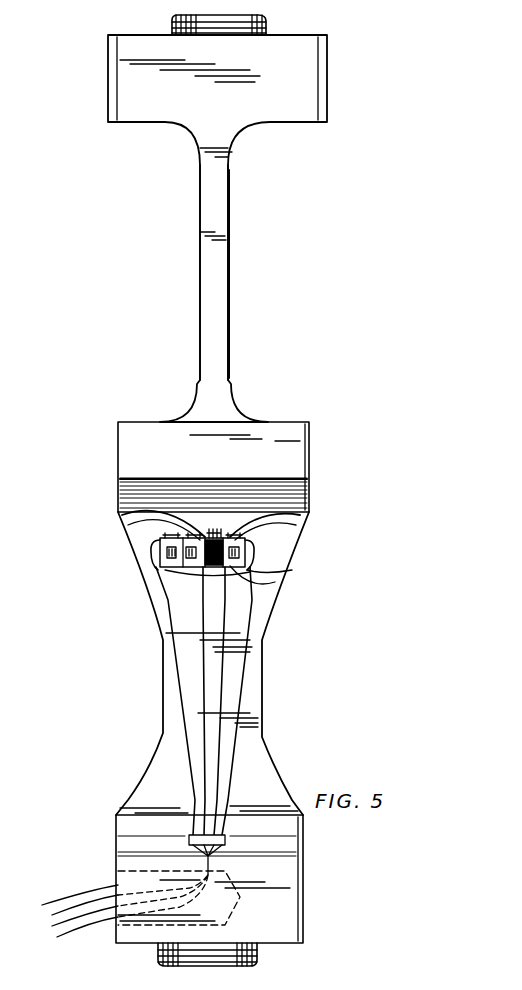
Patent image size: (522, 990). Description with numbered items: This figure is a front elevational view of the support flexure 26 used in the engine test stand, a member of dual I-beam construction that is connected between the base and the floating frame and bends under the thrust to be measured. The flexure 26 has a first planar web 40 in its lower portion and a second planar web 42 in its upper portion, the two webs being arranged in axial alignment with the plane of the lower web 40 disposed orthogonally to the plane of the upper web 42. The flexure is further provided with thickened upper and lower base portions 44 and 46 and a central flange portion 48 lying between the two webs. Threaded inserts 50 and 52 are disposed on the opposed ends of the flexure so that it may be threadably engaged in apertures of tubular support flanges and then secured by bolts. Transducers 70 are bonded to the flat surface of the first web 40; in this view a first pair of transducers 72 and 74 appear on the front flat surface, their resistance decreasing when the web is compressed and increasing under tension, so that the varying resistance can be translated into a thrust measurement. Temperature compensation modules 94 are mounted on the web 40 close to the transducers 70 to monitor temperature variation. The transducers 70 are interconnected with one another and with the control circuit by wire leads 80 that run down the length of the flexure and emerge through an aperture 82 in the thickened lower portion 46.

The support flexure 26 is at (318, 312).
The first planar web 40 is at (258, 666).
The second planar web 42 is at (227, 280).
The upper base portion 44 is at (300, 95).
The lower base portion 46 is at (288, 905).
The central flange portion 48 is at (290, 460).
The threaded insert 50 is at (257, 958).
The threaded insert 52 is at (266, 25).
The transducers 70 is at (152, 551).
The first pair transducer 72 is at (264, 581).
The first pair transducer 74 is at (286, 569).
The wire leads 80 is at (122, 513).
The aperture 82 is at (163, 920).
The temperature compensation modules 94 is at (185, 568).